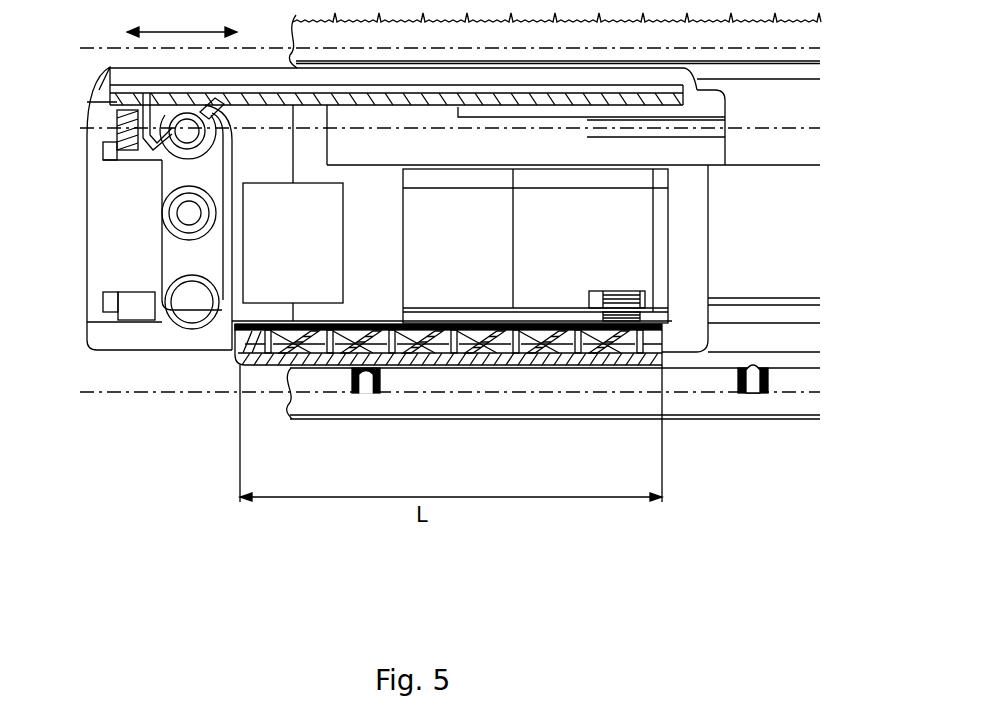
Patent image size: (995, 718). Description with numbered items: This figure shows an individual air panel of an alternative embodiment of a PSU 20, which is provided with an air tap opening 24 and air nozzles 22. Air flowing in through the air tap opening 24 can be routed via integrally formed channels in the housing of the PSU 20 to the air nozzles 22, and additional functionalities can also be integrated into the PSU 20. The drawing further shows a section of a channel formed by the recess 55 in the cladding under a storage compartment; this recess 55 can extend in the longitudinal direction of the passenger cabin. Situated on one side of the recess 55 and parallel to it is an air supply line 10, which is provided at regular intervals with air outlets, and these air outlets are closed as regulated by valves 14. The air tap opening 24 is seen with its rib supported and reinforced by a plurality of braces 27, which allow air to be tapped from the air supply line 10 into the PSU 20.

The air supply line 10 is at (553, 435).
The valves 14 is at (757, 375).
The PSU 20 is at (133, 208).
The air nozzles 22 is at (182, 212).
The air tap opening 24 is at (417, 411).
The braces 27 is at (272, 373).
The recess 55 is at (780, 243).